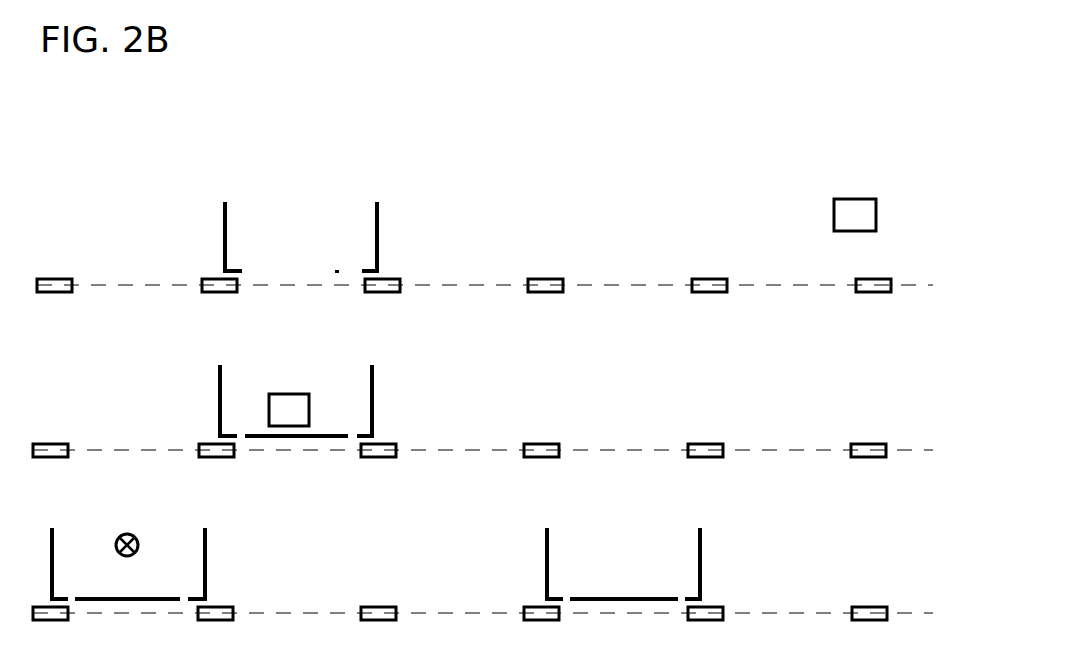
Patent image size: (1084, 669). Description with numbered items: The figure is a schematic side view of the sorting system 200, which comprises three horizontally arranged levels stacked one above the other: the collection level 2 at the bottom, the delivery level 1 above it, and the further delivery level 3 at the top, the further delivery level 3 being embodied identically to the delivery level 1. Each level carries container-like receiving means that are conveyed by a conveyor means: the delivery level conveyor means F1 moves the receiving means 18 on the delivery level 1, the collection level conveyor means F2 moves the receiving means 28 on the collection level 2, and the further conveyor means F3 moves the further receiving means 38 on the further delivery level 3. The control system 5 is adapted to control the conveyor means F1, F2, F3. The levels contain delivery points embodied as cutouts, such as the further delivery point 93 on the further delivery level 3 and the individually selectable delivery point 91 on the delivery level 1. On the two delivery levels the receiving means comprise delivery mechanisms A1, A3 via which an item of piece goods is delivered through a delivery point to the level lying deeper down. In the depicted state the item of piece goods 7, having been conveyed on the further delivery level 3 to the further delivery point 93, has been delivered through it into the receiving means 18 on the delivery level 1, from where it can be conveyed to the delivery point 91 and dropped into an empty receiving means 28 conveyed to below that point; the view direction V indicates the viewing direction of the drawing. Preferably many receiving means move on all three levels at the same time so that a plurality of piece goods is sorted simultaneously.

The sorting system 200 is at (643, 178).
The delivery level 1 is at (763, 450).
The collection level 2 is at (767, 613).
The further delivery level 3 is at (758, 285).
The control system 5 is at (863, 198).
The item of piece goods 7 is at (298, 393).
The receiving means of the delivery level 18 is at (209, 378).
The receiving means of the collection level 28 is at (208, 572).
The further receiving means 38 is at (210, 213).
The delivery point 91 is at (463, 404).
The further delivery point 93 is at (298, 131).
The delivery mechanism A1 is at (335, 436).
The delivery mechanism A3 is at (337, 272).
The delivery level conveyor means F1 is at (373, 367).
The collection level conveyor means F2 is at (208, 532).
The further conveyor means F3 is at (378, 203).
The view direction V is at (118, 535).